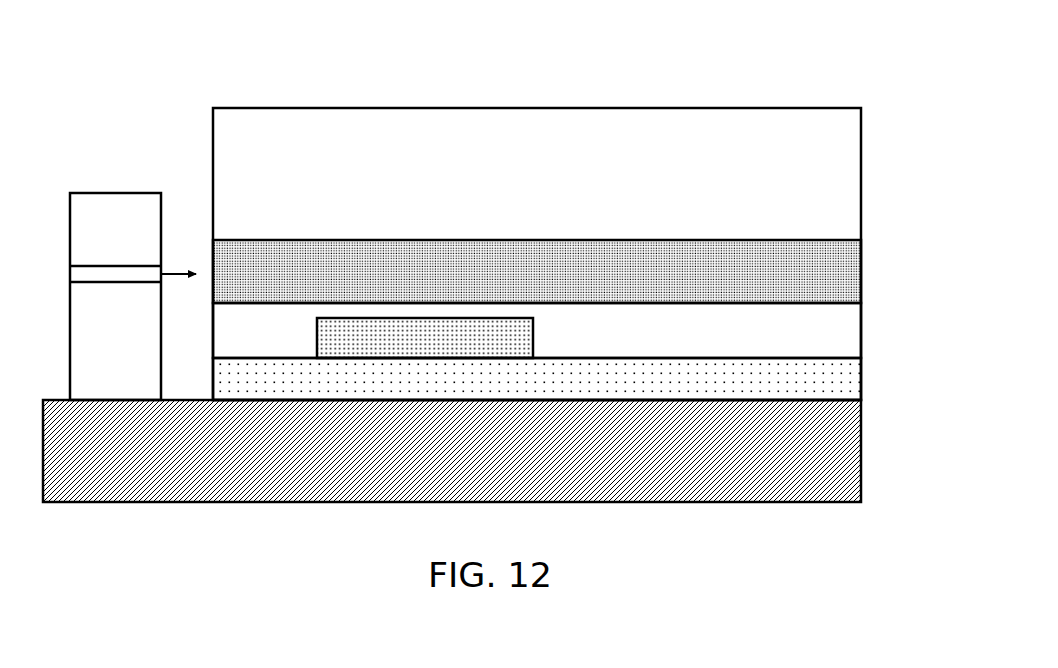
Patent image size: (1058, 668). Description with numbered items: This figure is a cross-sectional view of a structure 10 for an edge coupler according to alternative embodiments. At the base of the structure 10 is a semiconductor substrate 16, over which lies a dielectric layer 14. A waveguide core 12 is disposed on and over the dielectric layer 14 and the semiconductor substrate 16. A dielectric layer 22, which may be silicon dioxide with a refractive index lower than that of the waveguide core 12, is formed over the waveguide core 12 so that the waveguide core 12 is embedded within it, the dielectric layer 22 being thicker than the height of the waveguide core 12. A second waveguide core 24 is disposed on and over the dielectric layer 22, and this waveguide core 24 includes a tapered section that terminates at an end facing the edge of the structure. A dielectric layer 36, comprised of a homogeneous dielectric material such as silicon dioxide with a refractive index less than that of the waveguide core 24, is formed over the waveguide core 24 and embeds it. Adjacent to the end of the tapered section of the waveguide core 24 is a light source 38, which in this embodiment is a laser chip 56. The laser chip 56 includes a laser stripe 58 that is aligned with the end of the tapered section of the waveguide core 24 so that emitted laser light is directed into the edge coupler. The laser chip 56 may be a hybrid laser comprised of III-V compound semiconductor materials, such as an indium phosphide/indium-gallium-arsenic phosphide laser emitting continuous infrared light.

The structure 10 is at (172, 64).
The waveguide core 12 is at (355, 337).
The dielectric layer 14 is at (822, 380).
The semiconductor substrate 16 is at (830, 465).
The dielectric layer 22 is at (820, 335).
The waveguide core 24 is at (830, 260).
The dielectric layer 36 is at (833, 186).
The light source 38 is at (180, 180).
The laser chip 56 is at (128, 222).
The laser stripe 58 is at (143, 277).